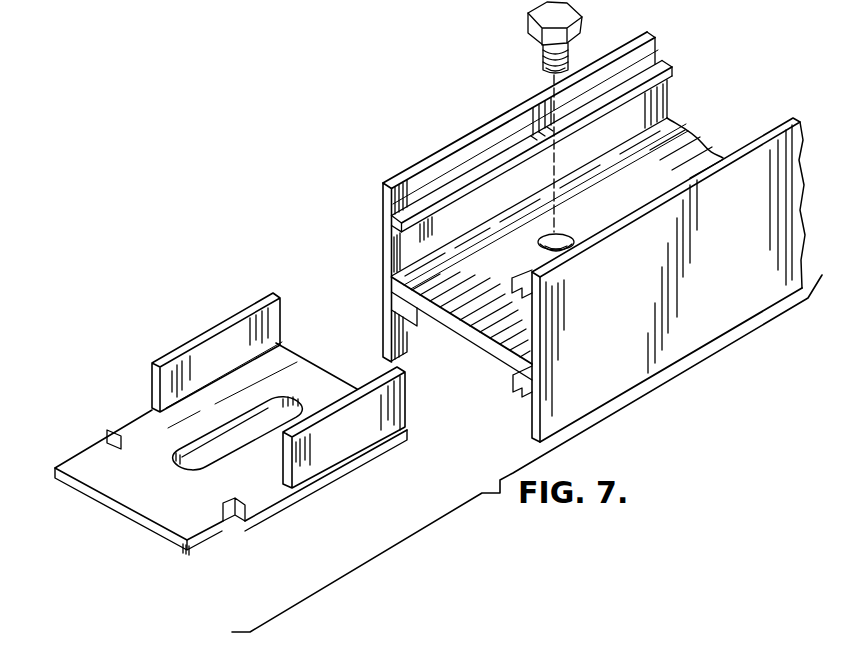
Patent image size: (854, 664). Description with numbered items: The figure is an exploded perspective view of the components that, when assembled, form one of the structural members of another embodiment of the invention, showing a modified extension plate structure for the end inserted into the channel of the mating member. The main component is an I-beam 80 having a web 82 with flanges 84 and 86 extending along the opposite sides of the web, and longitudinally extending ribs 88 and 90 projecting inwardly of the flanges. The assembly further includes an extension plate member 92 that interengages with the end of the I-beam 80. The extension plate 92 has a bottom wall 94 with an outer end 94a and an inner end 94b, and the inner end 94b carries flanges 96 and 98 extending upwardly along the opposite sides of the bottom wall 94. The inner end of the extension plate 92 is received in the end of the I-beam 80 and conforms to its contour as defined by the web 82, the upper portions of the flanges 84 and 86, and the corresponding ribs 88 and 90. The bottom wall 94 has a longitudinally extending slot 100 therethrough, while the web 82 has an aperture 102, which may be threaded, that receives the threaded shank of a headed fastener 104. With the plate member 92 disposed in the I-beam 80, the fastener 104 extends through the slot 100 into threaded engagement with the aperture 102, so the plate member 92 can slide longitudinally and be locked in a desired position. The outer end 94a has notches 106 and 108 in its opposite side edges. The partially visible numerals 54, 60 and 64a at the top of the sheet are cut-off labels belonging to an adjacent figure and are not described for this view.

The element 54 is at (209, 1).
The element 60 is at (375, 1).
The element 64a is at (475, 1).
The I-beam 80 is at (517, 217).
The web 82 is at (514, 381).
The flange 84 is at (403, 242).
The flange 86 is at (643, 284).
The longitudinally extending rib 88 is at (397, 216).
The longitudinally extending rib 90 is at (518, 297).
The extension plate member 92 is at (217, 429).
The bottom wall 94 is at (155, 423).
The outer end 94a is at (143, 507).
The inner end 94b is at (293, 367).
The flange 96 is at (270, 297).
The flange 98 is at (348, 433).
The slot 100 is at (238, 448).
The aperture 102 is at (566, 232).
The headed fastener 104 is at (582, 9).
The notch 106 is at (106, 437).
The notch 108 is at (237, 521).